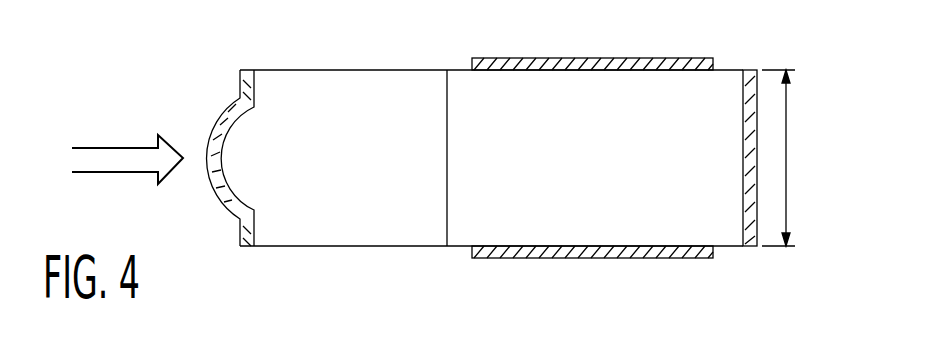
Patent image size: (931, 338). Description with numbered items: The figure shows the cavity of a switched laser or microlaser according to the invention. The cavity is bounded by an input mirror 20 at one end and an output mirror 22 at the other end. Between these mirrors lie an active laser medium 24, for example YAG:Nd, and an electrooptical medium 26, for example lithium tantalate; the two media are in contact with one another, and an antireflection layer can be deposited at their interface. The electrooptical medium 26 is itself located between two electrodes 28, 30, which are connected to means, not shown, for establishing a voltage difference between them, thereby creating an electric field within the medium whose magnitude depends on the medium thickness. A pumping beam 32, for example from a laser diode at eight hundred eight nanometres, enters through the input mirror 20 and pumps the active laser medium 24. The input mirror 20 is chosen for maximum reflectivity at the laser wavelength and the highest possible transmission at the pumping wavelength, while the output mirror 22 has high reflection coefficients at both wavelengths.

The input mirror 20 is at (227, 202).
The output mirror 22 is at (748, 242).
The active laser medium 24 is at (347, 33).
The electrooptical medium 26 is at (718, 82).
The electrode 28 is at (583, 65).
The electrode 30 is at (580, 250).
The pumping beam 32 is at (112, 153).